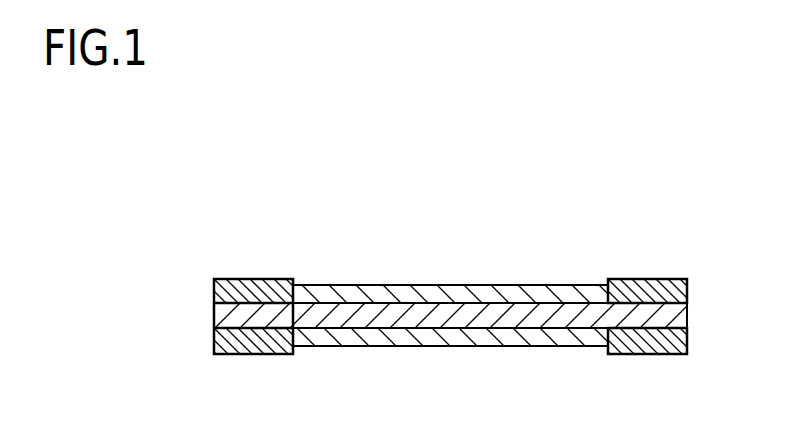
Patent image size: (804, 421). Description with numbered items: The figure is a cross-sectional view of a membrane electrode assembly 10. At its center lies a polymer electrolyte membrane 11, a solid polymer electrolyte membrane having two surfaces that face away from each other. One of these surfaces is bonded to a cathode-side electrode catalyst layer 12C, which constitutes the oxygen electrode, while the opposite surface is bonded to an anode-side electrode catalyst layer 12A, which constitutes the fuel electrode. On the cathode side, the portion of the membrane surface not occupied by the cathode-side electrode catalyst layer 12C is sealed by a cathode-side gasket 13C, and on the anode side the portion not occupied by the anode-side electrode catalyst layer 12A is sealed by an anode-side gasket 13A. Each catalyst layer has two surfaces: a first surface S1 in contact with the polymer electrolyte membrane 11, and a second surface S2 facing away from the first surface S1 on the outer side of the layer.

The membrane electrode assembly 10 is at (628, 228).
The polymer electrolyte membrane 11 is at (687, 310).
The cathode-side electrode catalyst layer 12C is at (327, 284).
The anode-side electrode catalyst layer 12A is at (327, 347).
The cathode-side gasket 13C is at (668, 279).
The anode-side gasket 13A is at (665, 354).
The first surface S1 is at (433, 303).
The second surface S2 is at (500, 285).